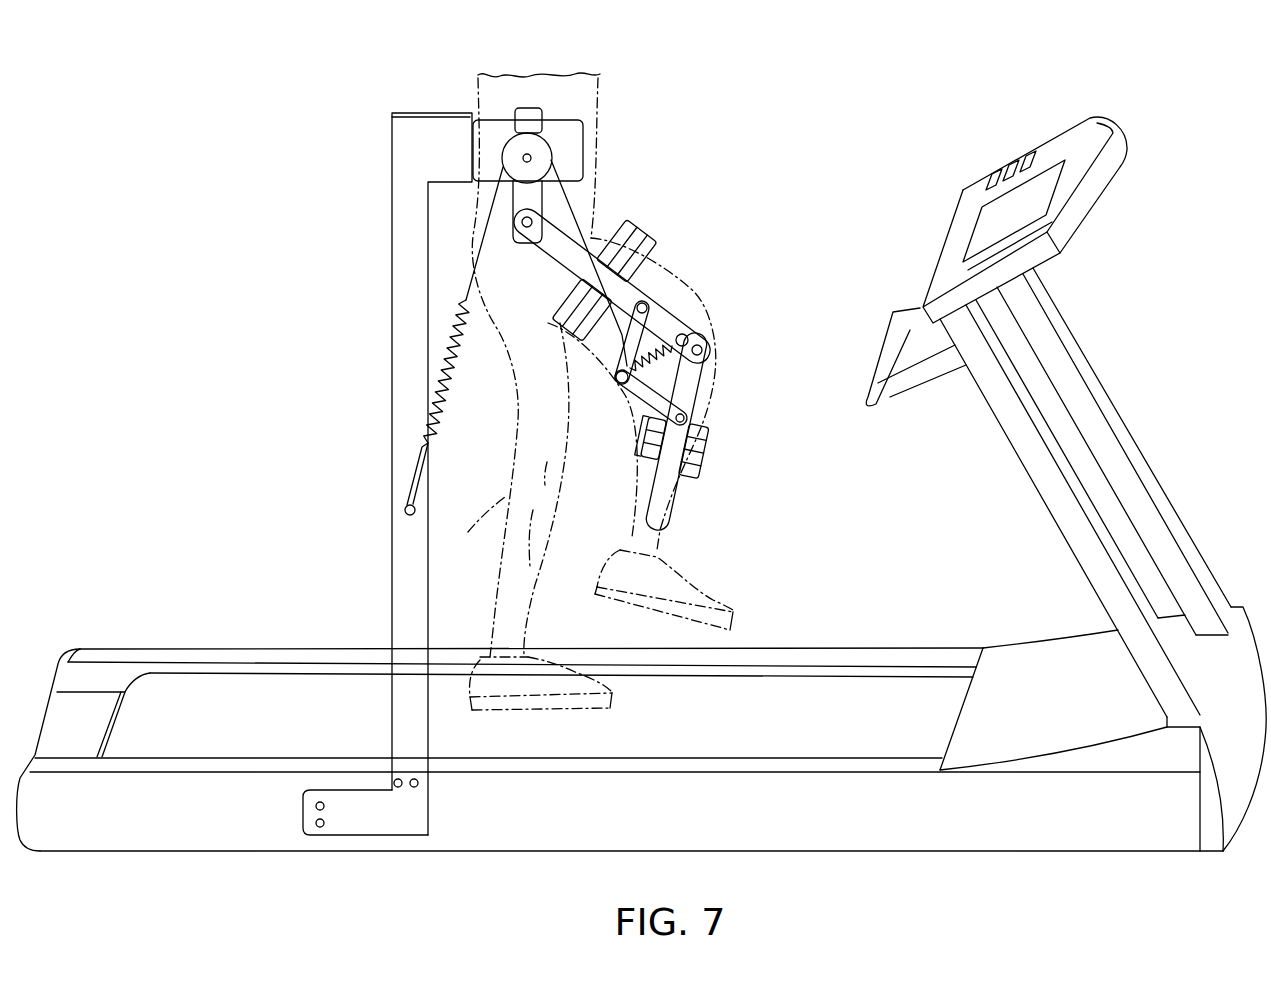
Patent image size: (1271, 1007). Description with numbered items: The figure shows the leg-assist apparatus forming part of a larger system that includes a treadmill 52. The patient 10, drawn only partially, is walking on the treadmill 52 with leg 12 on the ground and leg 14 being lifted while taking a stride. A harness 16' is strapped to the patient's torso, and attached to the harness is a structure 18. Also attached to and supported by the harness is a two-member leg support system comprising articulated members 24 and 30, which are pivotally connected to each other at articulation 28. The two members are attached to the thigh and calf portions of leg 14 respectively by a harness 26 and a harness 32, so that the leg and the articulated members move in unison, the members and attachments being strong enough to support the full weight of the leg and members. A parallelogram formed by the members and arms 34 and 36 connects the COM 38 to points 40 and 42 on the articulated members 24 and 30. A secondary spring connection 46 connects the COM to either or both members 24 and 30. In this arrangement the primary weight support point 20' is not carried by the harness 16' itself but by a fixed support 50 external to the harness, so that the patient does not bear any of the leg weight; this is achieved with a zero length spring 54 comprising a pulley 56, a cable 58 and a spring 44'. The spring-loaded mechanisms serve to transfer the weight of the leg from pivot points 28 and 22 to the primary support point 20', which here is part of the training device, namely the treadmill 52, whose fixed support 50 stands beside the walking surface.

The patient 10 is at (702, 160).
The leg 12 is at (529, 391).
The leg 14 is at (690, 290).
The harness 16' is at (545, 109).
The structure 18 is at (528, 115).
The primary weight support point 20' is at (381, 500).
The pivot point 22 is at (523, 220).
The articulated member 24 is at (672, 322).
The harness 26 is at (605, 252).
The articulation 28 is at (700, 342).
The articulated member 30 is at (695, 378).
The harness 32 is at (700, 450).
The arm 34 is at (650, 398).
The arm 36 is at (638, 336).
The COM 38 is at (620, 383).
The point 40 is at (641, 296).
The point 42 is at (695, 432).
The spring 44' is at (455, 371).
The secondary spring connection 46 is at (678, 378).
The fixed support 50 is at (416, 103).
The treadmill 52 is at (830, 628).
The zero length spring 54 is at (441, 305).
The pulley 56 is at (518, 148).
The cable 58 is at (580, 197).